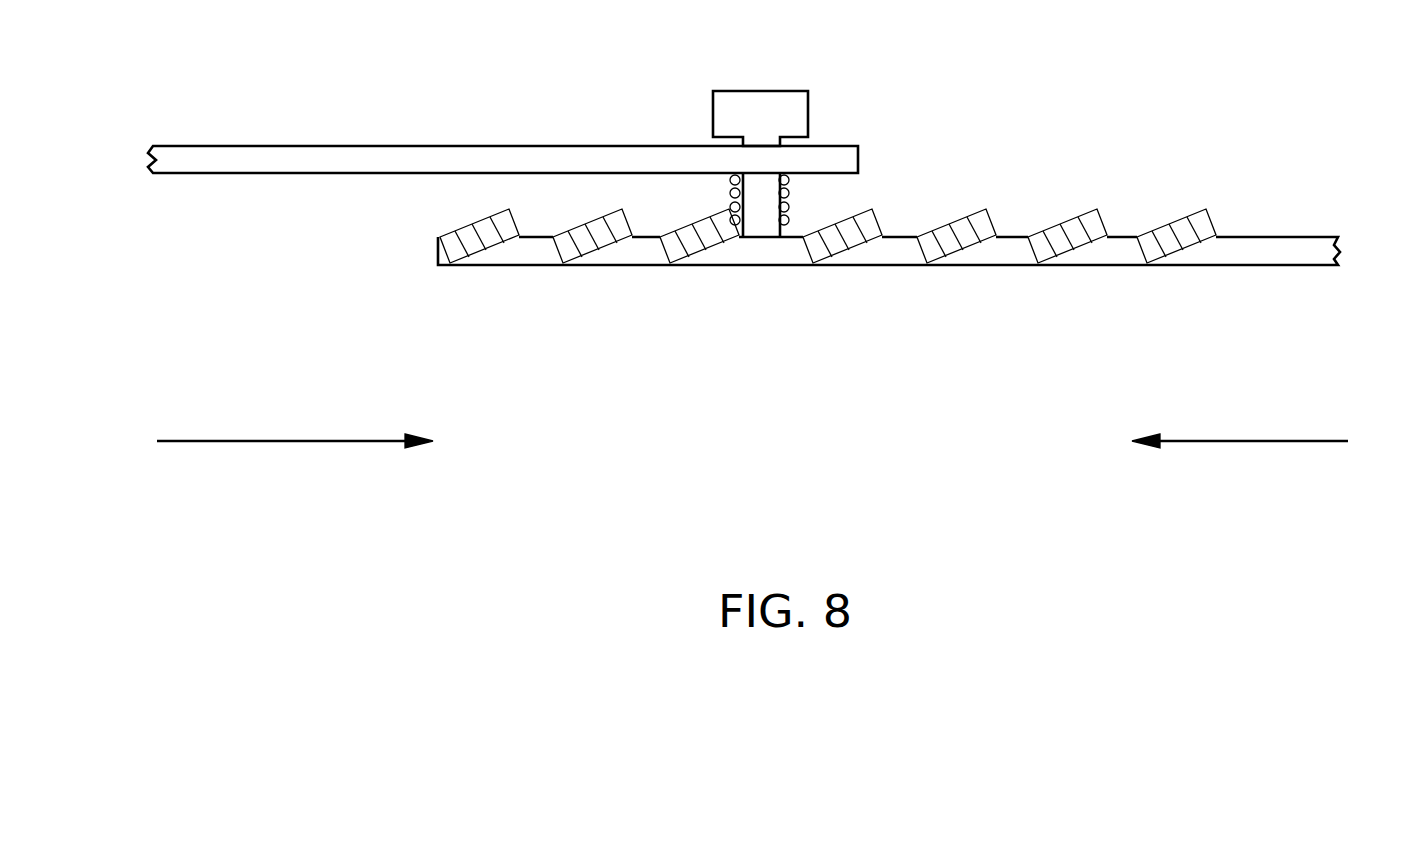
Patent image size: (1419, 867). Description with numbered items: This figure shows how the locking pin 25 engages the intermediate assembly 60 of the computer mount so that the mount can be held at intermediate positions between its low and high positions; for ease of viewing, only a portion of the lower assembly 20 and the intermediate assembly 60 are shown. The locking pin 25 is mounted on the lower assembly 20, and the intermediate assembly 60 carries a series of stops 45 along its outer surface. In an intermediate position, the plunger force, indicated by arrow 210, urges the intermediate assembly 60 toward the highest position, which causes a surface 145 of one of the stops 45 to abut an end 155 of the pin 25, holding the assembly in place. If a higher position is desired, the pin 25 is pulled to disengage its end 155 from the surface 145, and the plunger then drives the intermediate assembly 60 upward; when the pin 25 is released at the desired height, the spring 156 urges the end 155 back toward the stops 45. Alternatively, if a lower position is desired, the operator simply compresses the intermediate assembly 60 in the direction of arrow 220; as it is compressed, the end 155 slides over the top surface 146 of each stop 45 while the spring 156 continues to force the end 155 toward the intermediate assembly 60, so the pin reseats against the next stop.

The lower assembly 20 is at (395, 157).
The locking pin 25 is at (765, 103).
The stops 45 is at (848, 240).
The intermediate assembly 60 is at (1318, 253).
The surface of stops 145 is at (738, 240).
The top surface of stops 146 is at (958, 218).
The end of pin 155 is at (762, 227).
The spring 156 is at (730, 192).
The arrow indicating plunger force 210 is at (220, 441).
The arrow indicating compression 220 is at (1322, 441).